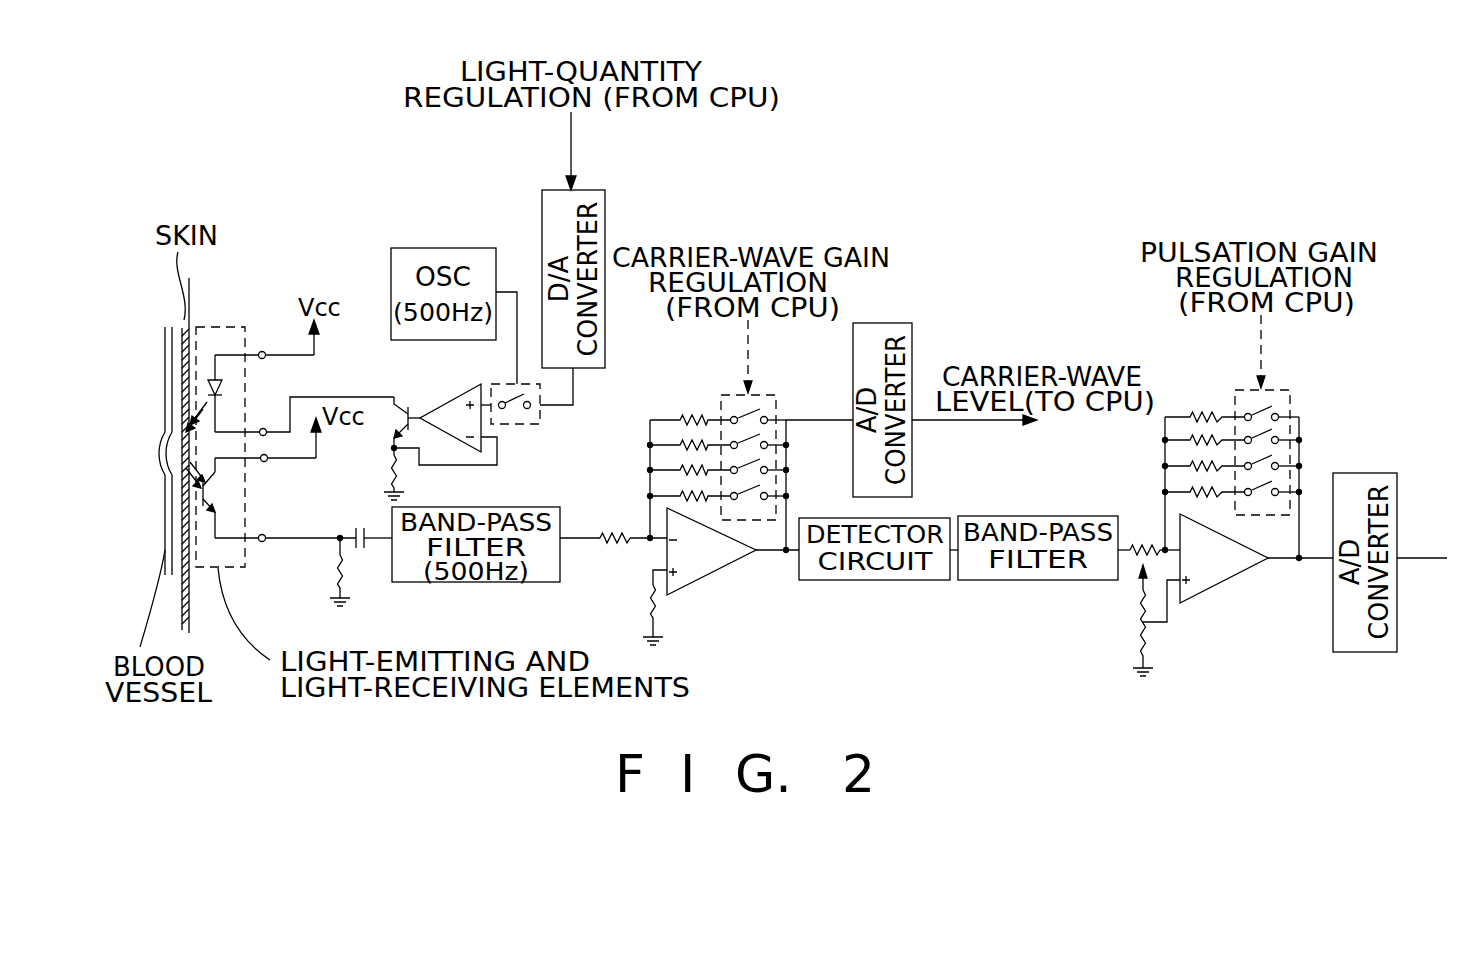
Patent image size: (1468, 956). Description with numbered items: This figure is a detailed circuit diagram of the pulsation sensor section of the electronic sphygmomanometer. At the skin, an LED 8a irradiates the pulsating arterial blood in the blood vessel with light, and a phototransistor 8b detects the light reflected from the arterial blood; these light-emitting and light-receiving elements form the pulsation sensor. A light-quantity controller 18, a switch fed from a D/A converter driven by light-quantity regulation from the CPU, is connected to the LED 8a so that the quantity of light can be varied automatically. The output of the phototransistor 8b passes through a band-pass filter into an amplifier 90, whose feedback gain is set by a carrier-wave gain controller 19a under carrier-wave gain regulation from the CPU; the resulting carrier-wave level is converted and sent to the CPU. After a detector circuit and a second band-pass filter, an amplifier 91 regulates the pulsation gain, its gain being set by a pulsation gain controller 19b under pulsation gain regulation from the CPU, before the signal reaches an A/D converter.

The LED 8a is at (237, 330).
The phototransistor 8b is at (222, 556).
The light-quantity controller 18 is at (531, 424).
The carrier-wave gain controller 19a is at (767, 384).
The pulsation gain controller 19b is at (1279, 380).
The amplifier 90 is at (718, 572).
The amplifier 91 is at (1235, 578).